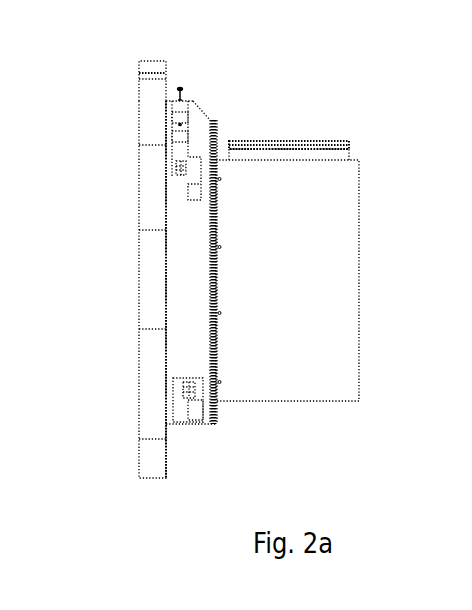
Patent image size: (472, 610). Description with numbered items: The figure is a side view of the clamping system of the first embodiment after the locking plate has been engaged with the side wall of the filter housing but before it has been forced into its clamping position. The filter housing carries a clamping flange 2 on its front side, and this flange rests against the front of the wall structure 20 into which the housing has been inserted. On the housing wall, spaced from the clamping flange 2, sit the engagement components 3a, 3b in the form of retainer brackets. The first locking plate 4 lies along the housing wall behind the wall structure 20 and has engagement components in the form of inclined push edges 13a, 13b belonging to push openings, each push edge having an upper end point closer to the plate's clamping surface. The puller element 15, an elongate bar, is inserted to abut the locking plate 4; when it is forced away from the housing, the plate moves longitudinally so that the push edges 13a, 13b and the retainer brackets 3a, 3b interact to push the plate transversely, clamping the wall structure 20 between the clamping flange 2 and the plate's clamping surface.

The clamping flange 2 is at (139, 267).
The wall structure 20 is at (153, 88).
The first locking plate 4 is at (198, 127).
The puller element 15 is at (182, 122).
The engagement component 3a is at (183, 164).
The push edge 13a is at (188, 187).
The engagement component 3b is at (182, 385).
The push edge 13b is at (188, 410).